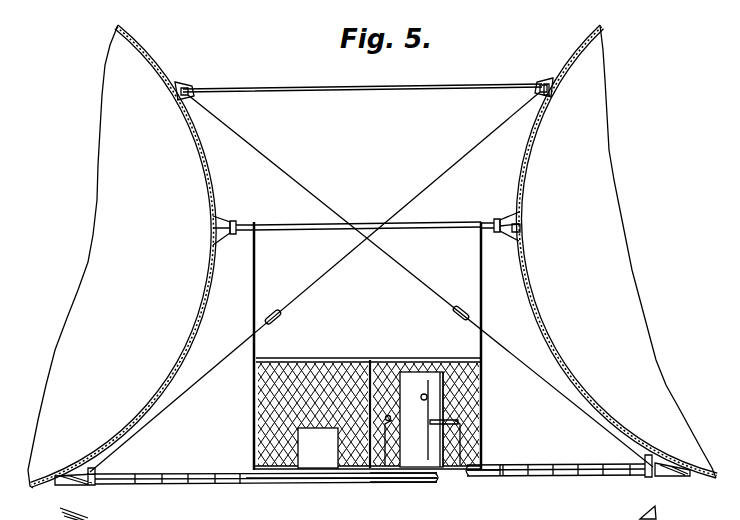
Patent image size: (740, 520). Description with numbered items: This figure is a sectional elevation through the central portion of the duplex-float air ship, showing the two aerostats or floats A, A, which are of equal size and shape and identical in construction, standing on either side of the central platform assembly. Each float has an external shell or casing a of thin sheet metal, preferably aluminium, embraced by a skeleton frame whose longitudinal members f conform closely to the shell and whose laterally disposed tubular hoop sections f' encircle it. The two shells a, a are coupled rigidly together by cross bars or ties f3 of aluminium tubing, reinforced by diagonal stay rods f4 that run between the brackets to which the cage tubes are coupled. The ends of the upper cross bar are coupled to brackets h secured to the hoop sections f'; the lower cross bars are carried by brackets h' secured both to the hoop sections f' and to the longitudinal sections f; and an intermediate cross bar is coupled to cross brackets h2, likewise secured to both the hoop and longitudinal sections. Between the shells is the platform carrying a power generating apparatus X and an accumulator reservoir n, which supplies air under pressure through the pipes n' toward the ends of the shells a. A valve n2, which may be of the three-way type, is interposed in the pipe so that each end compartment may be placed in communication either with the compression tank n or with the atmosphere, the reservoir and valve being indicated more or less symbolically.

The aerostat or float A is at (372, 256).
The external shell or casing a is at (373, 256).
The longitudinal member f is at (534, 139).
The tubular hoop section f' is at (373, 256).
The cross bar or tie f3 is at (529, 463).
The stay rod f4 is at (371, 282).
The bracket h is at (364, 81).
The bracket for lower cross bar h' is at (372, 479).
The cross bracket h2 is at (366, 233).
The accumulator reservoir n is at (422, 419).
The pipe n' is at (408, 483).
The valve n2 is at (458, 421).
The power generating apparatus X is at (318, 448).